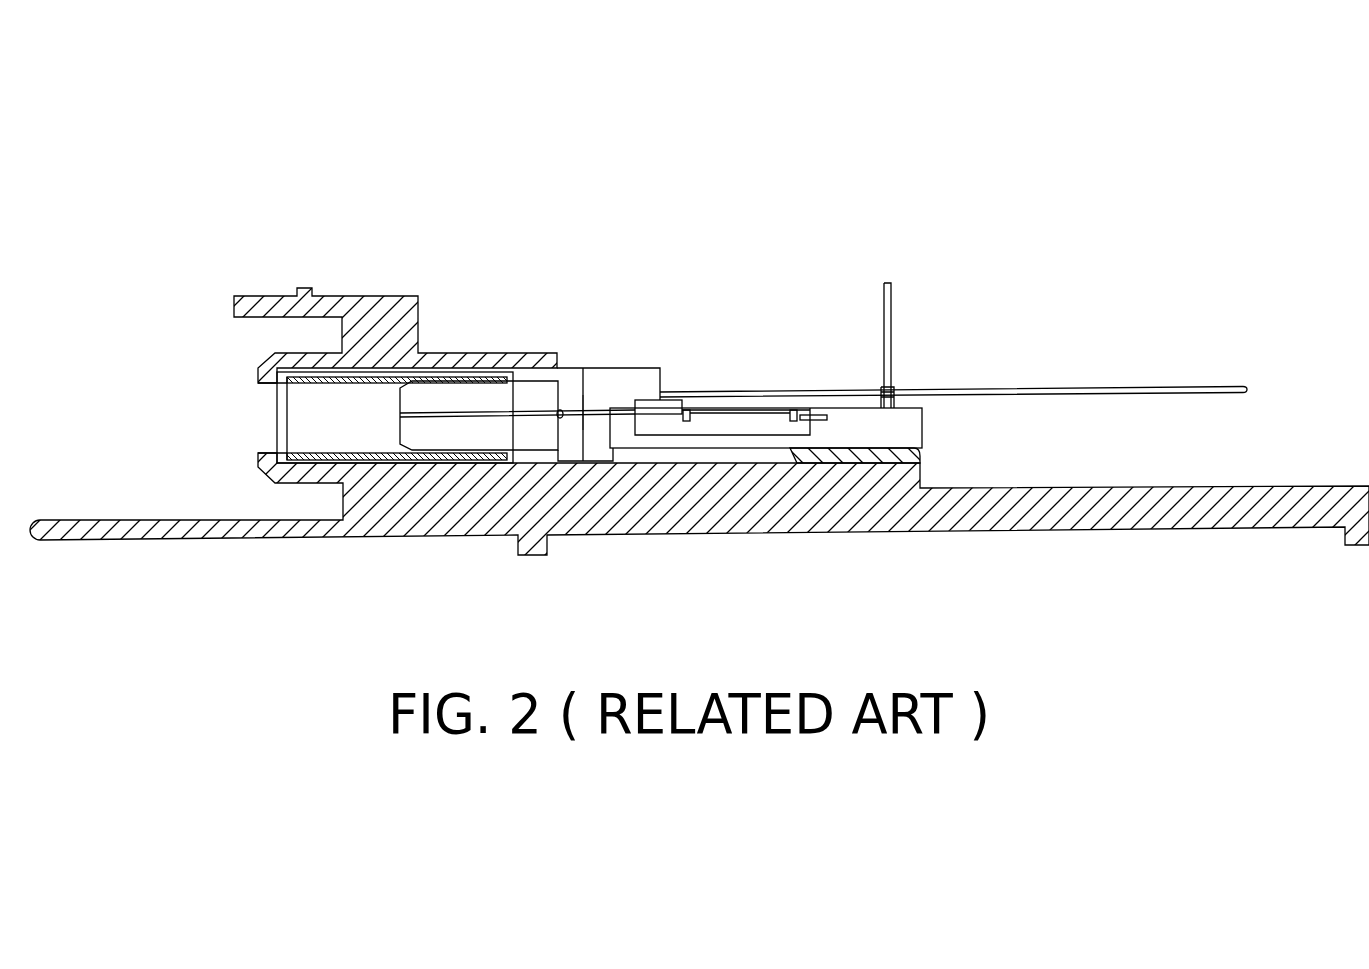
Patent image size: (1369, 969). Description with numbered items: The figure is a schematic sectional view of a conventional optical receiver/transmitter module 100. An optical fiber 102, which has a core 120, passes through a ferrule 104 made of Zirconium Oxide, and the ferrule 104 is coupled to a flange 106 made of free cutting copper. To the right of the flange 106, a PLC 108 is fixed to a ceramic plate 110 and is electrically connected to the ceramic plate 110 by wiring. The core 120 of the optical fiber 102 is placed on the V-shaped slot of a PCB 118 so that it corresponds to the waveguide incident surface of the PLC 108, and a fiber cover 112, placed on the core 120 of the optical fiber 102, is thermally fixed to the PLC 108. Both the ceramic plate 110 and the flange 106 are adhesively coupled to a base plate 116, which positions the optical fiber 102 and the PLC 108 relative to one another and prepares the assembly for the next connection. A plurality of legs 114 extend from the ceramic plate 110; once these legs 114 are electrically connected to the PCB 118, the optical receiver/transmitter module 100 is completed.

The optical receiver/transmitter module 100 is at (60, 126).
The optical fiber 102 is at (530, 395).
The ferrule 104 is at (461, 380).
The flange 106 is at (643, 373).
The PLC 108 is at (772, 423).
The ceramic plate 110 is at (916, 424).
The fiber cover 112 is at (670, 403).
The legs 114 is at (885, 280).
The base plate 116 is at (1298, 492).
The PCB 118 is at (1040, 385).
The core 120 is at (578, 410).